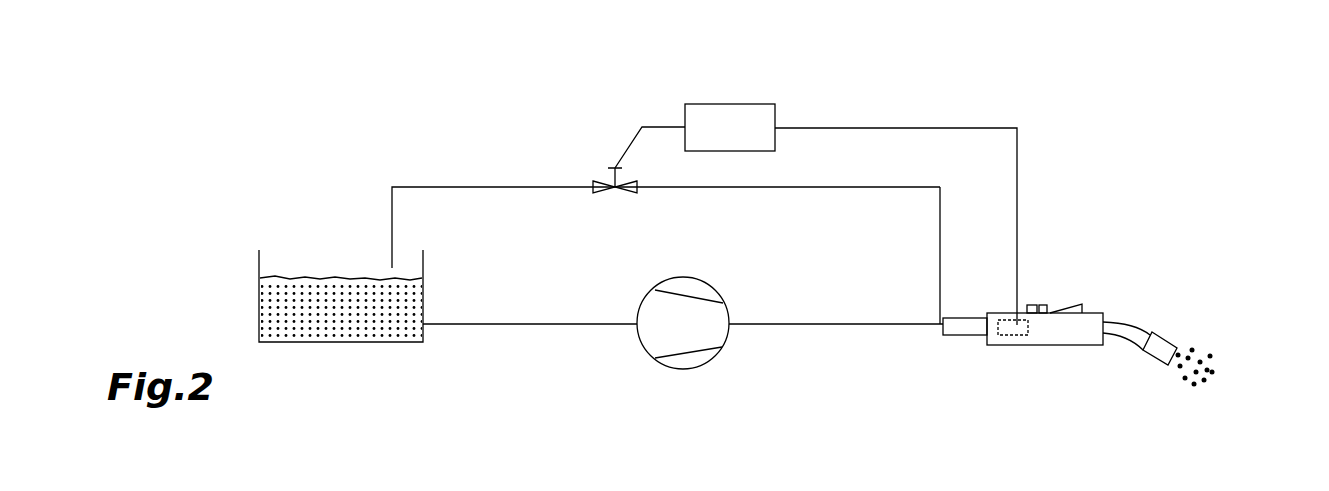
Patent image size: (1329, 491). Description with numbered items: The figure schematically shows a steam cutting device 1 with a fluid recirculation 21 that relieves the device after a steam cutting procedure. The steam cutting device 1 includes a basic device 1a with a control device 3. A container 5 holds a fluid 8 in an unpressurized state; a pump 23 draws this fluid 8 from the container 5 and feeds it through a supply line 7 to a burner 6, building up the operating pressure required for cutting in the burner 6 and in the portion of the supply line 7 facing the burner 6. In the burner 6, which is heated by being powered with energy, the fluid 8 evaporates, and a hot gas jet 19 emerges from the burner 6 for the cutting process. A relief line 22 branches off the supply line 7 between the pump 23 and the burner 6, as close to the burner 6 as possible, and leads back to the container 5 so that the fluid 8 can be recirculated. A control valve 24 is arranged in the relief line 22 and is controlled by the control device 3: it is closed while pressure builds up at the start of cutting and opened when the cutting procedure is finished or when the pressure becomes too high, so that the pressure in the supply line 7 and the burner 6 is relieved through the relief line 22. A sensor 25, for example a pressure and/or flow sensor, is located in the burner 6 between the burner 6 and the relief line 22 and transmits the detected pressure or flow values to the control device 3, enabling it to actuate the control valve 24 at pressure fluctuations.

The steam cutting device 1 is at (338, 153).
The basic device 1a is at (1048, 187).
The control device 3 is at (743, 128).
The container 5 is at (285, 362).
The burner 6 is at (1036, 373).
The supply line 7 is at (547, 326).
The fluid 8 is at (337, 298).
The gas jet 19 is at (1207, 350).
The fluid recirculation 21 is at (262, 303).
The relief line 22 is at (942, 242).
The pump 23 is at (680, 325).
The control valve 24 is at (593, 172).
The sensor 25 is at (1022, 338).